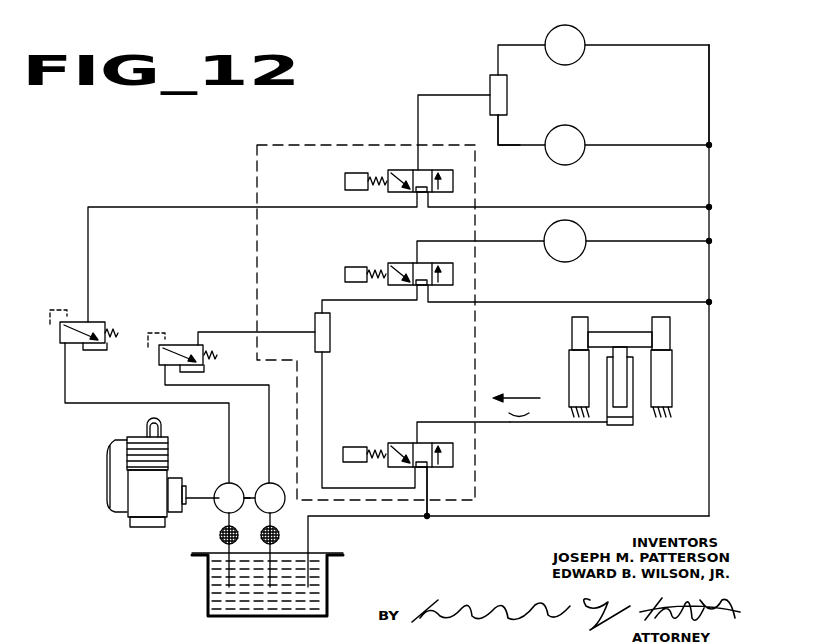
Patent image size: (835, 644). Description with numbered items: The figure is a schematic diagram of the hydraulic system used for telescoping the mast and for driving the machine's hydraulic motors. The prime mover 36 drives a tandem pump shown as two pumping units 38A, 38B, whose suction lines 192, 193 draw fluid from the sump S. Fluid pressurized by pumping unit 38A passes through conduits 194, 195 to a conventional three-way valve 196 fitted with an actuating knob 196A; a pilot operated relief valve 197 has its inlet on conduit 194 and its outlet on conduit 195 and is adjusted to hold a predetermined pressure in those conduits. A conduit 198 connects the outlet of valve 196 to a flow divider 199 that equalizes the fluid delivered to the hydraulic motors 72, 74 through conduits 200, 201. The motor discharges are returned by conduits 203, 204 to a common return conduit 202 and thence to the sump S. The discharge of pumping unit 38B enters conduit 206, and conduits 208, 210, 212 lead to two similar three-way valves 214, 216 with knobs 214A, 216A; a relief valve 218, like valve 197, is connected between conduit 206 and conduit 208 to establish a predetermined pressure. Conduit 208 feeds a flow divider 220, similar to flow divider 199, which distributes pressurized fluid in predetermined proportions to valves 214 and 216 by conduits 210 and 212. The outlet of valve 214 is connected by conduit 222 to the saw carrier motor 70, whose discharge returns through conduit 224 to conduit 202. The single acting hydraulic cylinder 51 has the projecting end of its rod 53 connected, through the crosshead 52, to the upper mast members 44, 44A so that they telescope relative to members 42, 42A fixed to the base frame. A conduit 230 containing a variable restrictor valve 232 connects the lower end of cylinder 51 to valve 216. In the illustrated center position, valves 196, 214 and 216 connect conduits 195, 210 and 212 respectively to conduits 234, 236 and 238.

The prime mover 36 is at (142, 493).
The pumping unit 38A is at (227, 490).
The pumping unit 38B is at (270, 490).
The mast member 42 is at (580, 370).
The mast member 42A is at (663, 372).
The upper mast member 44 is at (580, 328).
The upper mast member 44A is at (662, 333).
The single acting hydraulic cylinder 51 is at (633, 393).
The crosshead 52 is at (598, 339).
The rod 53 is at (619, 358).
The saw carrier motor 70 is at (565, 248).
The hydraulic motor 72 is at (557, 47).
The hydraulic motor 74 is at (560, 136).
The suction line 192 is at (217, 518).
The suction line 193 is at (268, 515).
The conduit 194 is at (65, 375).
The conduit 195 is at (88, 233).
The three-way valve 196 is at (402, 163).
The actuating knob 196A is at (345, 181).
The pilot operated relief valve 197 is at (95, 322).
The conduit 198 is at (418, 112).
The flow divider 199 is at (490, 92).
The conduit 200 is at (498, 60).
The conduit 201 is at (518, 145).
The common return conduit 202 is at (709, 92).
The conduit 203 is at (628, 46).
The conduit 204 is at (637, 145).
The conduit 206 is at (237, 372).
The conduit 208 is at (218, 331).
The conduit 210 is at (333, 300).
The conduit 212 is at (322, 395).
The three-way valve 214 is at (405, 257).
The actuating knob 214A is at (356, 266).
The three-way valve 216 is at (399, 436).
The actuating knob 216A is at (355, 447).
The relief valve 218 is at (158, 355).
The flow divider 220 is at (327, 330).
The conduit 222 is at (530, 241).
The conduit 224 is at (617, 241).
The conduit 230 is at (455, 421).
The variable restrictor valve 232 is at (515, 428).
The conduit 234 is at (567, 207).
The conduit 236 is at (515, 302).
The conduit 238 is at (432, 482).
The sump S is at (208, 585).